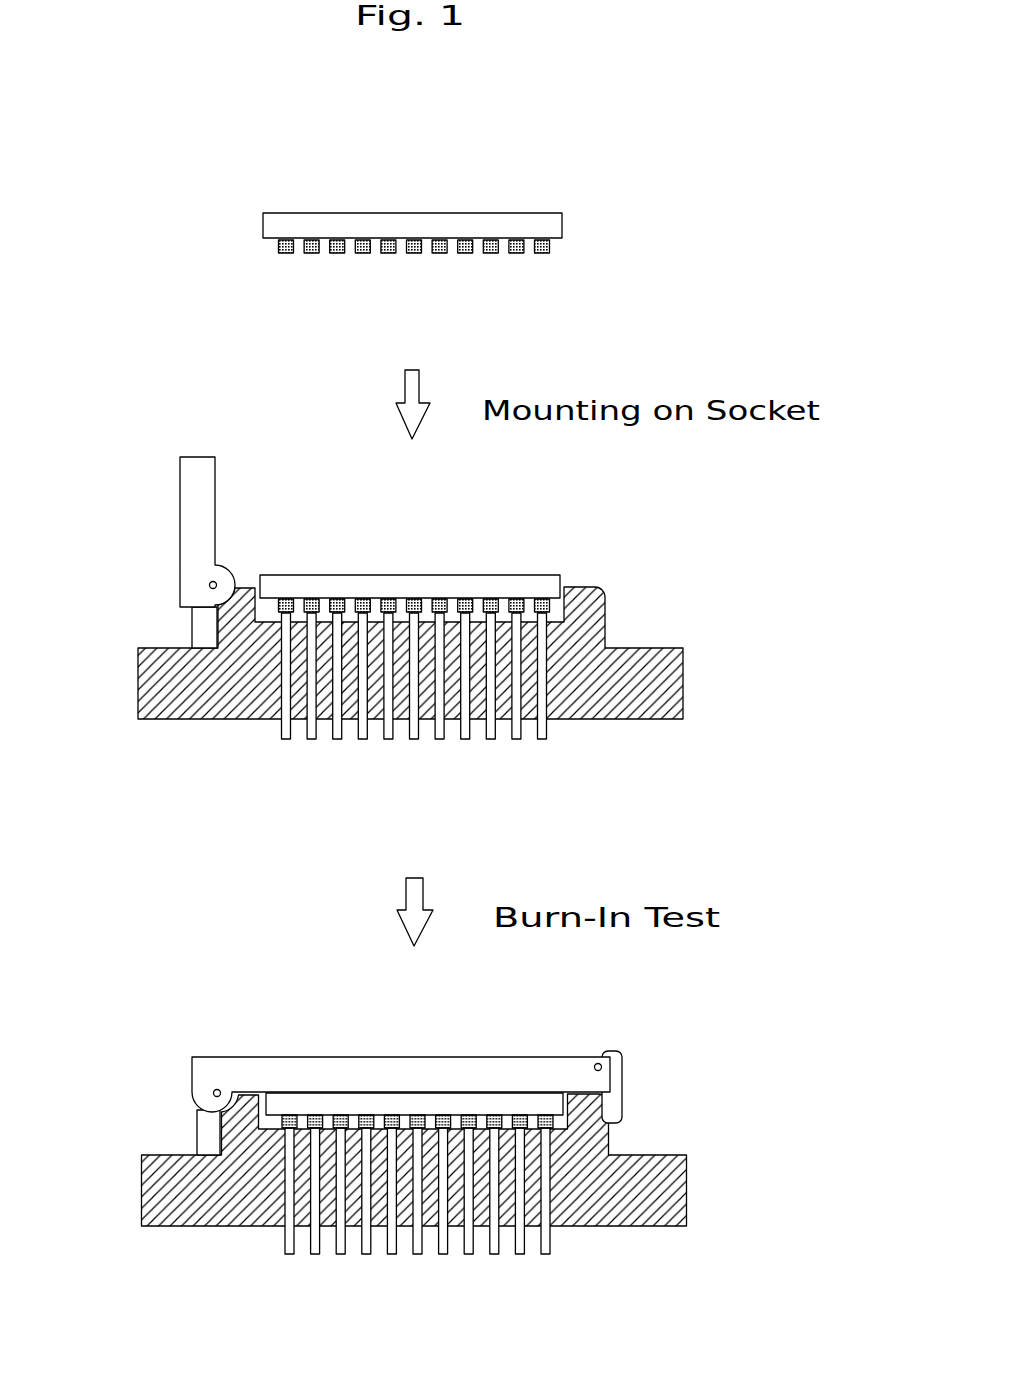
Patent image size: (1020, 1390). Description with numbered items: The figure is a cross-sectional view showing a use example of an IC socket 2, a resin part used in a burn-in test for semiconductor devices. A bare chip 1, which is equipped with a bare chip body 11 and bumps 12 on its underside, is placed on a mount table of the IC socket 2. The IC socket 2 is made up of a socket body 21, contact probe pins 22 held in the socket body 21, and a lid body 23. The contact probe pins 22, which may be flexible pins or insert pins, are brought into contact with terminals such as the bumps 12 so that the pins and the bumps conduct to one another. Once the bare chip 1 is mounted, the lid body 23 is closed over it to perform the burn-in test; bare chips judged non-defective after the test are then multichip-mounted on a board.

The bare chip 1 is at (552, 640).
The bare chip body 11 is at (548, 223).
The bumps 12 is at (553, 248).
The IC socket 2 is at (460, 855).
The socket body 21 is at (633, 647).
The contact probe pins 22 is at (547, 732).
The lid body 23 is at (340, 806).